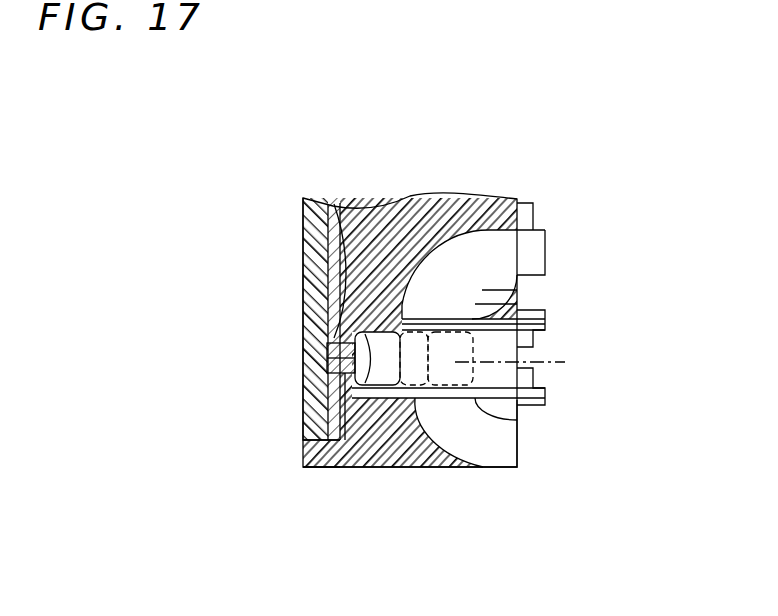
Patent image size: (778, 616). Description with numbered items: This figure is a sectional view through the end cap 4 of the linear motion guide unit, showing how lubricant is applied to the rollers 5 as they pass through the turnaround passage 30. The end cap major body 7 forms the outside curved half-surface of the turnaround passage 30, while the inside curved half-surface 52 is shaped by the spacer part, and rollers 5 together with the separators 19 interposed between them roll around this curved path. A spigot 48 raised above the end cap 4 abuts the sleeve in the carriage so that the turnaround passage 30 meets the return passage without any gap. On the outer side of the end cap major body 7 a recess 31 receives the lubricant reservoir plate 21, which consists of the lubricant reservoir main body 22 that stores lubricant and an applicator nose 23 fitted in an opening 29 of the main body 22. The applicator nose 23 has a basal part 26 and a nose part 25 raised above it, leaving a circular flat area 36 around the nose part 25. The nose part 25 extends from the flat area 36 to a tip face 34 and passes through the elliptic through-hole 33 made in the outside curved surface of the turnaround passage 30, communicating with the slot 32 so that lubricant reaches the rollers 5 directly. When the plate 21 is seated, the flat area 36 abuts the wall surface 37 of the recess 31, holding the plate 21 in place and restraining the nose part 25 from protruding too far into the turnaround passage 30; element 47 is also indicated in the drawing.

The end cap 4 is at (422, 232).
The roller 5 is at (401, 510).
The end cap major body 7 is at (415, 468).
The separator 19 is at (430, 448).
The lubricant reservoir plate 21 is at (302, 238).
The lubricant reservoir main body 22 is at (303, 210).
The applicator nose 23 is at (303, 358).
The nose part 25 is at (333, 468).
The basal part 26 is at (303, 345).
The opening 29 is at (303, 333).
The turnaround passage 30 is at (485, 258).
The recess 31 is at (340, 264).
The slot 32 is at (388, 250).
The through-hole 33 is at (370, 250).
The tip face 34 is at (378, 430).
The circular flat area 36 is at (332, 210).
The wall surface 37 is at (303, 383).
The base portion 47 is at (312, 462).
The spigot 48 is at (533, 310).
The inside curved half-surface 52 is at (315, 468).